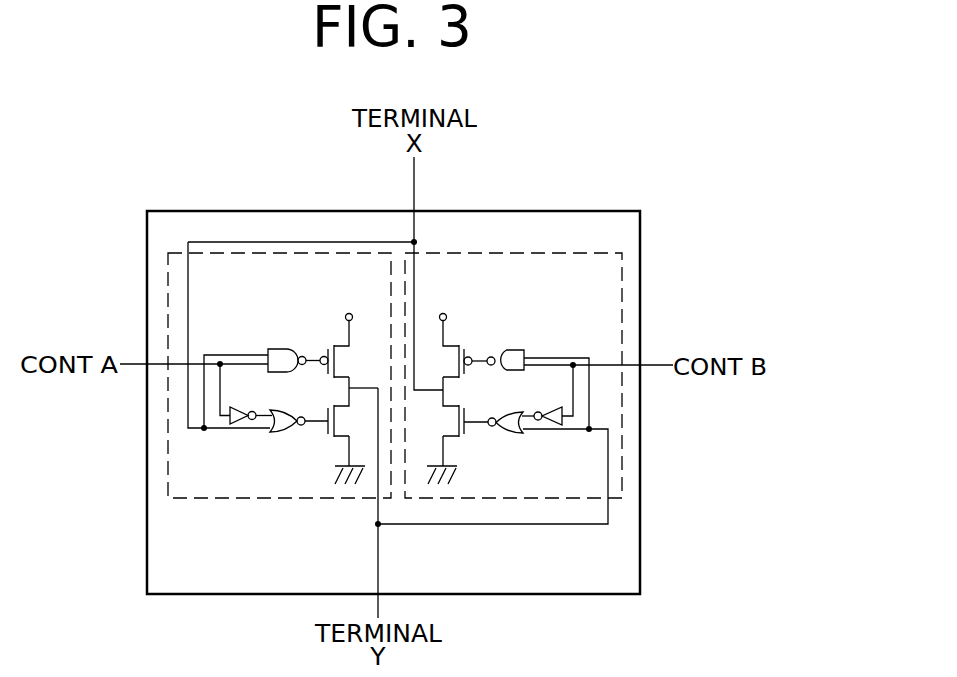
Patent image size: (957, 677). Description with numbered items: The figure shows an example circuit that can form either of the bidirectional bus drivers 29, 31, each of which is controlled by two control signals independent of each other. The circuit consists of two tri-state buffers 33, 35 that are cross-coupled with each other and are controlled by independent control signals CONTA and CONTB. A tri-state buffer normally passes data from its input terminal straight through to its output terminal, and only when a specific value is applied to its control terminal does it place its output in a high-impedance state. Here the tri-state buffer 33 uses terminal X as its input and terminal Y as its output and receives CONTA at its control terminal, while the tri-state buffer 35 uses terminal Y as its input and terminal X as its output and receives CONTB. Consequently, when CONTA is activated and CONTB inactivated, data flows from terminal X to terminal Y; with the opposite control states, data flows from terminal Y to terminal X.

The bus driver 29 is at (578, 131).
The bus driver 31 is at (633, 131).
The tri-state buffer 33 is at (263, 500).
The tri-state buffer 35 is at (562, 247).